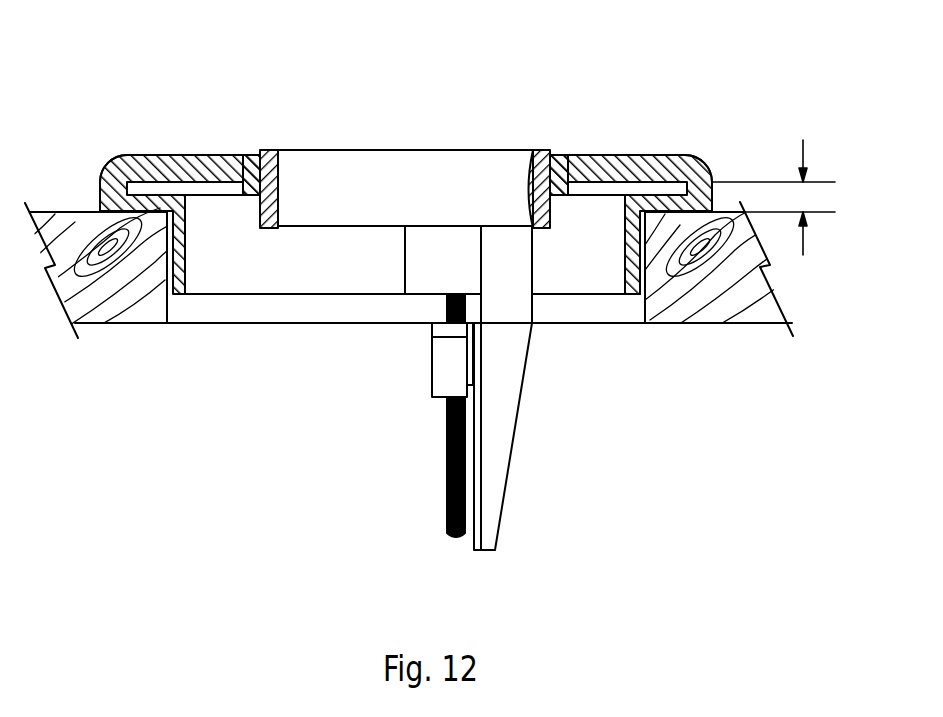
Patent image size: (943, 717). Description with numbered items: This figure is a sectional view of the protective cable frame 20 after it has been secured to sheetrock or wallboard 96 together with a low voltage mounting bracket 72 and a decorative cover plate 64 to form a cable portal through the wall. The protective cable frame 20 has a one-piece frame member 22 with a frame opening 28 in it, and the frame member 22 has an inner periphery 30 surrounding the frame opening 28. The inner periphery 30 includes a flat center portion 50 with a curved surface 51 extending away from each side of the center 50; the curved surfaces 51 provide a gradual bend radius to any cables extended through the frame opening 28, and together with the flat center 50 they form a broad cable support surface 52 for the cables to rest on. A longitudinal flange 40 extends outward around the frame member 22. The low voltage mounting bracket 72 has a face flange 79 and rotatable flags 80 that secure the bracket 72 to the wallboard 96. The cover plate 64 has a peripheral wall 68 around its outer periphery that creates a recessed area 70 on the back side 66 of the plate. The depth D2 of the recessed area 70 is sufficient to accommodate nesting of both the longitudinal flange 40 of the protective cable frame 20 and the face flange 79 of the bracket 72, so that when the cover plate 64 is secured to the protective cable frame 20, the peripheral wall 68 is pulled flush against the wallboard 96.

The protective cable frame 20 is at (480, 150).
The one-piece frame member 22 is at (525, 228).
The frame opening 28 is at (388, 172).
The inner periphery 30 is at (427, 172).
The longitudinal flange 40 is at (252, 157).
The flat center portion 50 is at (278, 190).
The curved surfaces 51 is at (278, 151).
The broad cable support surface 52 is at (523, 152).
The decorative cover plate 64 is at (632, 157).
The back side 66 is at (610, 195).
The peripheral wall 68 is at (98, 190).
The recessed area 70 is at (188, 157).
The low voltage mounting bracket 72 is at (578, 294).
The face flange 79 is at (672, 157).
The rotatable flags 80 is at (432, 363).
The wallboard 96 is at (118, 323).
The depth of the recessed area D2 is at (773, 210).